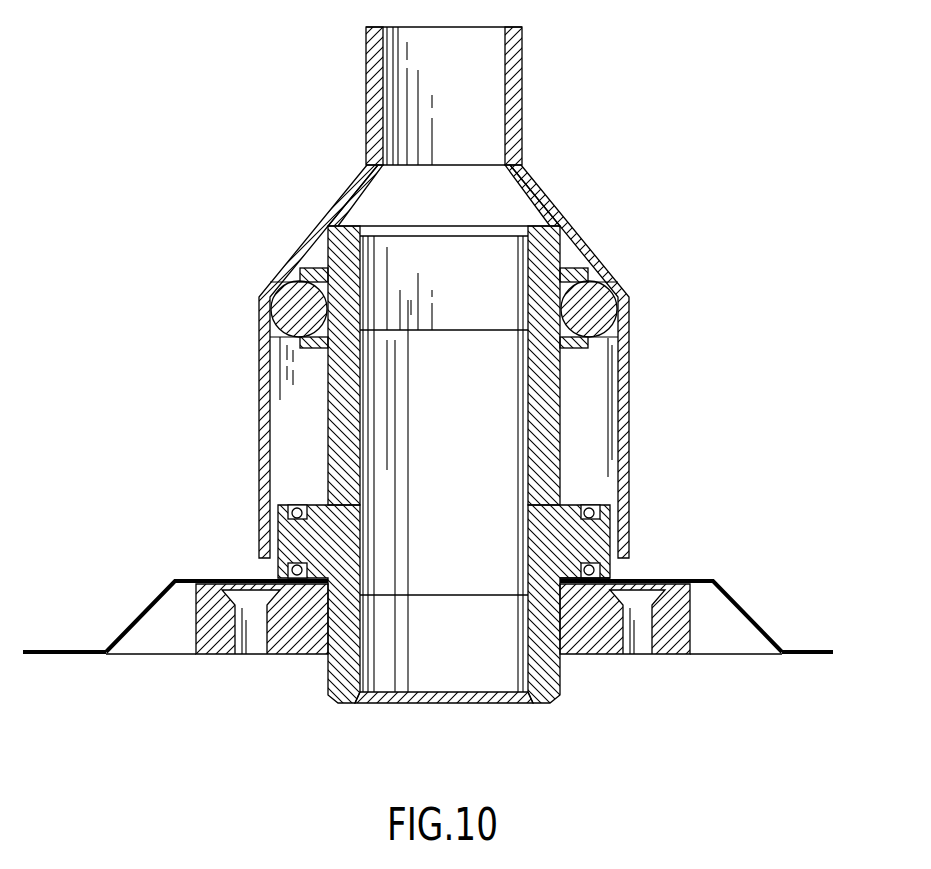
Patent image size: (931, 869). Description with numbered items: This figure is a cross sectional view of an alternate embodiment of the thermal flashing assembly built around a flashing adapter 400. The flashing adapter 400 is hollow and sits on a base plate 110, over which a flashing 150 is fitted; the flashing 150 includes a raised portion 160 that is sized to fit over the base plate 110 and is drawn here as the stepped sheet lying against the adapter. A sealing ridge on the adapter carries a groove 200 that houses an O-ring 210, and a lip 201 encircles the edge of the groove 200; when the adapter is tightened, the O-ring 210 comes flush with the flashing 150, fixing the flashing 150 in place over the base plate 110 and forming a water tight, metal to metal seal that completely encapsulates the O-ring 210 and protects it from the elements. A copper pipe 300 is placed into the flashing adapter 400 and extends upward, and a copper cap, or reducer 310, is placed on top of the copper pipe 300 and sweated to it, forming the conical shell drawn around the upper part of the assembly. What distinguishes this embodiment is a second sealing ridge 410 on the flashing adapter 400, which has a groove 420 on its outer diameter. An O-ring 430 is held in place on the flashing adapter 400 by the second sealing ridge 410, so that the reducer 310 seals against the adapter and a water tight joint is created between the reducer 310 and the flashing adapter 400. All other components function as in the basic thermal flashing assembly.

The base plate 110 is at (223, 630).
The flashing 150 is at (78, 648).
The raised portion 160 is at (147, 608).
The groove 200 is at (588, 505).
The lip 201 is at (280, 568).
The O-ring 210 is at (612, 568).
The copper pipe 300 is at (524, 88).
The copper cap, or reducer 310 is at (298, 240).
The flashing adapter 400 is at (574, 237).
The second sealing ridge 410 is at (575, 269).
The groove 420 is at (612, 270).
The O-ring 430 is at (595, 317).